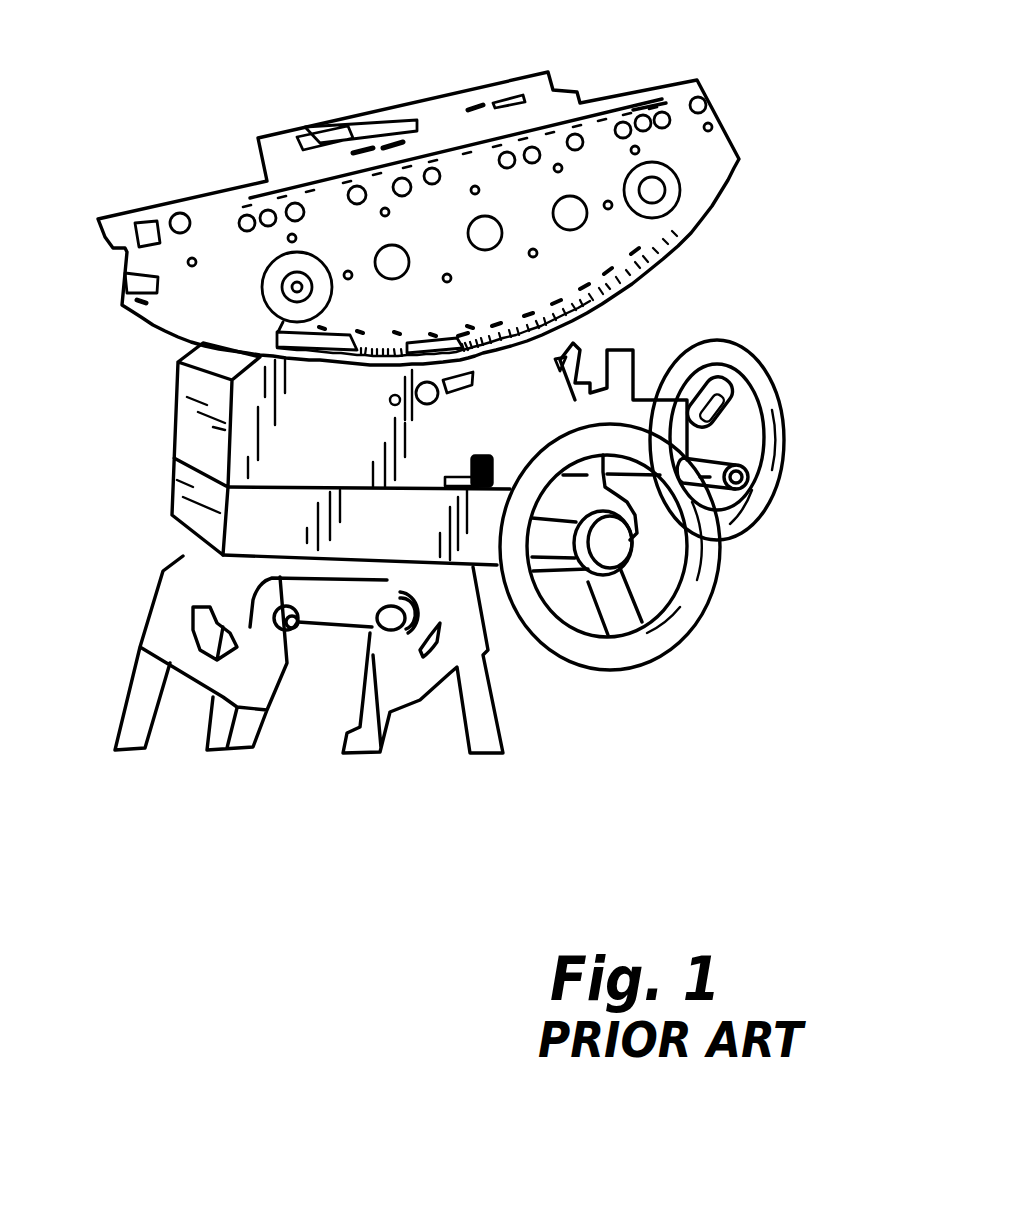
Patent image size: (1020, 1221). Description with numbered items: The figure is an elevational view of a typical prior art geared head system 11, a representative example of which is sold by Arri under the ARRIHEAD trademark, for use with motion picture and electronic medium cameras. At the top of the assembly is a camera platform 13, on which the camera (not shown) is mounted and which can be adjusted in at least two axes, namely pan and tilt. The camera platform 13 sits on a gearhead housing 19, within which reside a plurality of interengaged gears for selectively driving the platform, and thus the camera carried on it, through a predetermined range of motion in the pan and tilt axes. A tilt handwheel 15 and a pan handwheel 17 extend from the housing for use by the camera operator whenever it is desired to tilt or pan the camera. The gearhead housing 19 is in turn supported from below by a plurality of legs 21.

The geared head system 11 is at (145, 482).
The camera platform 13 is at (737, 141).
The tilt handwheel 15 is at (760, 368).
The pan handwheel 17 is at (695, 597).
The gearhead housing 19 is at (174, 400).
The legs 21 is at (207, 750).